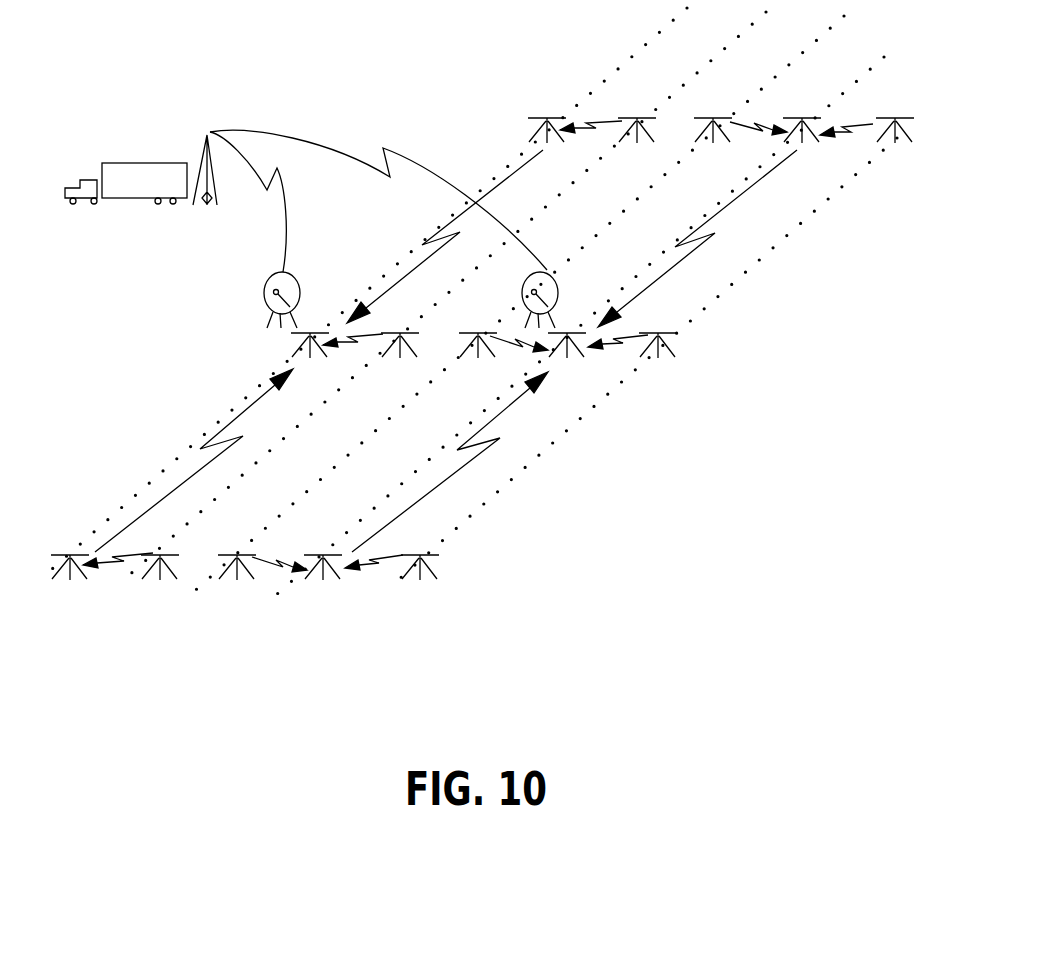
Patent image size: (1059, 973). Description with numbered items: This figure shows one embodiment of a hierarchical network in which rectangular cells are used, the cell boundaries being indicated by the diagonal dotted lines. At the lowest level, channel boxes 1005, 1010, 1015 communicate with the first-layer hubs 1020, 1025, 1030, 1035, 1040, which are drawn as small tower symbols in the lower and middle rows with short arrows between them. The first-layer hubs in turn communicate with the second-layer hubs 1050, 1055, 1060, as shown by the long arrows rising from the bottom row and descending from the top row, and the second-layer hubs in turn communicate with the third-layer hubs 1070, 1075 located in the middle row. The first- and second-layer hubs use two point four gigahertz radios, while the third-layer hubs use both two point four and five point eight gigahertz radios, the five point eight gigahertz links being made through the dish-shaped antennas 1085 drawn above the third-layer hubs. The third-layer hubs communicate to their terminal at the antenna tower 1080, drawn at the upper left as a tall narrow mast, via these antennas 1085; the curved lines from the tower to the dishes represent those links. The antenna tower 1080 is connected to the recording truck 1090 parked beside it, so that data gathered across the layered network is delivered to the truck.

The channel box 1005 is at (520, 473).
The channel box 1010 is at (555, 442).
The channel box 1015 is at (582, 417).
The Layer 1 hub 1020 is at (422, 585).
The Layer 1 hub 1025 is at (238, 584).
The Layer 1 hub 1030 is at (158, 584).
The Layer 1 hub 1035 is at (403, 358).
The Layer 1 hub 1040 is at (479, 358).
The Layer 2 hub 1050 is at (325, 585).
The Layer 2 hub 1055 is at (66, 584).
The Layer 2 hub 1060 is at (558, 144).
The Layer 3 hub 1070 is at (575, 358).
The Layer 3 hub 1075 is at (319, 358).
The antenna tower 1080 is at (219, 186).
The antennas 1085 is at (306, 292).
The recording truck 1090 is at (126, 196).